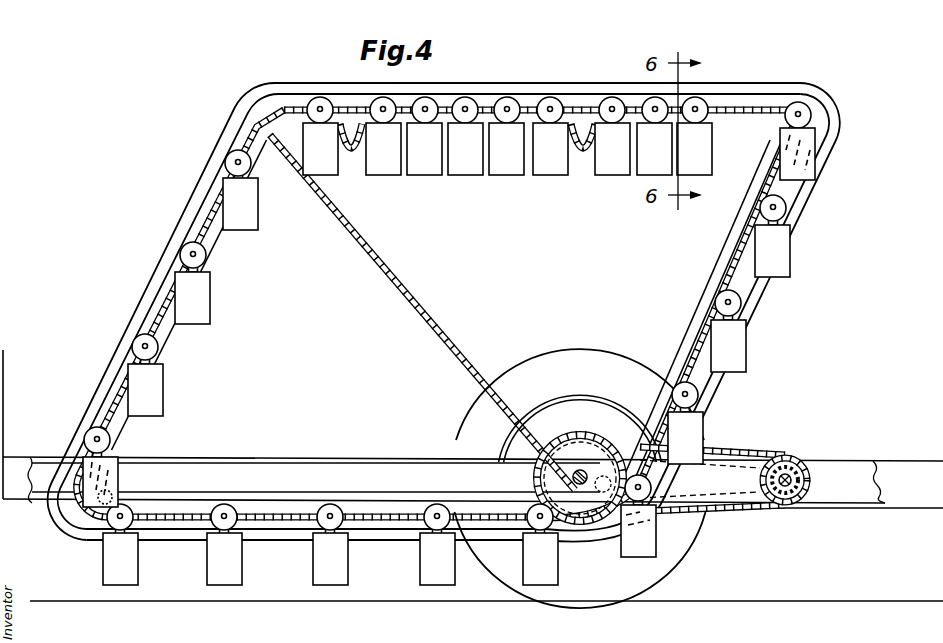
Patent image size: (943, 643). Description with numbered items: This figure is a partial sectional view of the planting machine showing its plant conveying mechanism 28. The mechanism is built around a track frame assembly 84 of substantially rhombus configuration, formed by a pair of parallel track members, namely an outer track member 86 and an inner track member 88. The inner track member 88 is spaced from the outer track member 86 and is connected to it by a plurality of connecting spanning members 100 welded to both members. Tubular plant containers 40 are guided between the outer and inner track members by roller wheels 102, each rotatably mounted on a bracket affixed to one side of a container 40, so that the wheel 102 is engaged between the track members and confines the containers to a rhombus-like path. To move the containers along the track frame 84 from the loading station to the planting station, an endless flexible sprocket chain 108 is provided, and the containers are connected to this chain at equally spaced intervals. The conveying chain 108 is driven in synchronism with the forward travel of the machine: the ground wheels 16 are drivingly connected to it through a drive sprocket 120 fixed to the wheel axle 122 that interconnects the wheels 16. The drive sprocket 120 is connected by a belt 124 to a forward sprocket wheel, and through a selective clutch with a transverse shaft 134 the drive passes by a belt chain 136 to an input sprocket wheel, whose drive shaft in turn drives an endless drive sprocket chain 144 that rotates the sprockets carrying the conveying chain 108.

The wheels 16 is at (561, 372).
The conveyor mechanism 28 is at (492, 332).
The containers 40 is at (790, 262).
The track frame assembly 84 is at (765, 307).
The outer track member 86 is at (155, 286).
The inner track member 88 is at (175, 338).
The connecting spanning members 100 is at (718, 105).
The roller wheels 102 is at (806, 123).
The endless flexible sprocket chain 108 is at (160, 326).
The drive sprocket 120 is at (552, 452).
The wheel axle 122 is at (579, 468).
The belt 124 is at (607, 436).
The shaft 134 is at (791, 490).
The belt chain 136 is at (750, 512).
The endless drive sprocket chain 144 is at (410, 294).